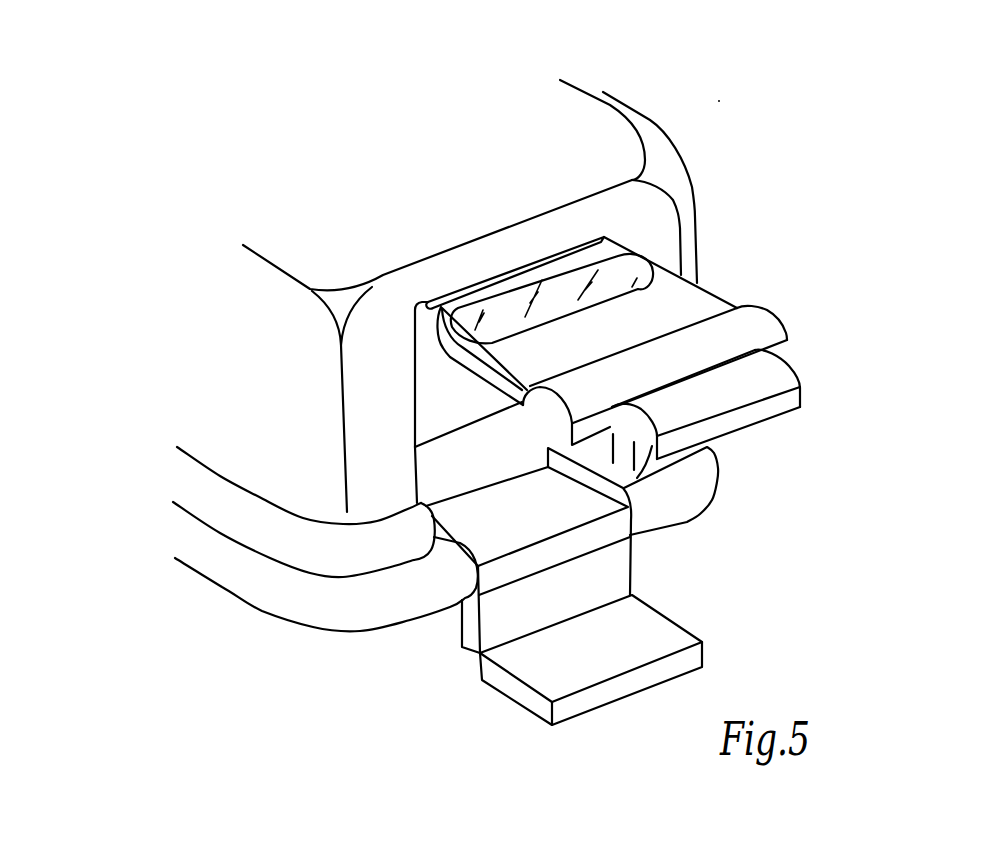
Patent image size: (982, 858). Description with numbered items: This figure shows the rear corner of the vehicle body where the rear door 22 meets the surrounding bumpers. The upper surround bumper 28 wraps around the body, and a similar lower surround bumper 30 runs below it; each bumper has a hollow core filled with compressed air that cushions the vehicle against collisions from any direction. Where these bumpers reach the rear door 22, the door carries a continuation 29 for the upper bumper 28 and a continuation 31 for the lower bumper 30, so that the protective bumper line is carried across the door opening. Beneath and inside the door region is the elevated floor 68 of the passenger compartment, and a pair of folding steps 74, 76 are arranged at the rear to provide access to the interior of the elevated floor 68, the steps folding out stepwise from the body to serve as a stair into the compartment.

The rear door 22 is at (708, 282).
The upper surround bumper 28 is at (217, 510).
The continuation for the upper bumper 29 is at (750, 327).
The lower surround bumper 30 is at (232, 575).
The continuation for the lower bumper 31 is at (747, 382).
The elevated floor 68 is at (432, 421).
The folding step 74 is at (506, 529).
The folding step 76 is at (627, 657).